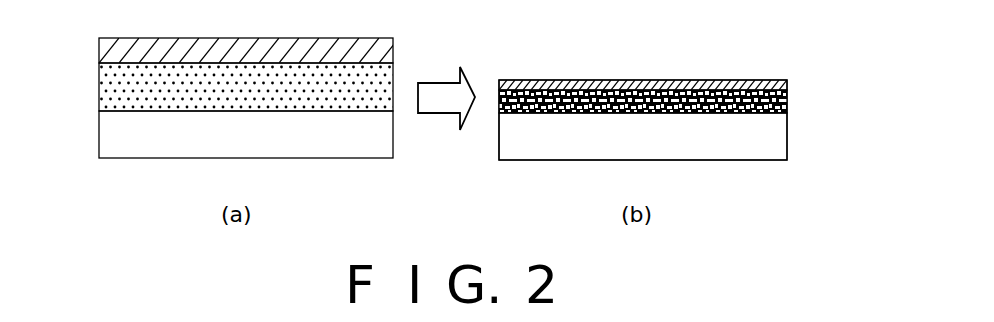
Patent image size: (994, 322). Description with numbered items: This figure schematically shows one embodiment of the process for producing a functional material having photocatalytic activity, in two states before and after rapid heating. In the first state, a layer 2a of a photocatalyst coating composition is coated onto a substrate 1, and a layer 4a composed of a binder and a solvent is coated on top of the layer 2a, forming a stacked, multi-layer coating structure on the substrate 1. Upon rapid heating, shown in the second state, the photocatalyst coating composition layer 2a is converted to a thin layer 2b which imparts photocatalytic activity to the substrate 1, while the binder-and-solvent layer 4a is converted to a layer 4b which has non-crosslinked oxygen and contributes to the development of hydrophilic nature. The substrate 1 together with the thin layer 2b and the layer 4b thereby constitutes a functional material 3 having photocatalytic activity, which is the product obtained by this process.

The substrate 1 is at (105, 135).
The layer of a photocatalyst coating composition 2a is at (103, 91).
The layer of a binder and a solvent 4a is at (100, 53).
The thin layer 2b is at (788, 103).
The layer having non-crosslinked oxygen 4b is at (788, 86).
The functional material 3 is at (691, 117).